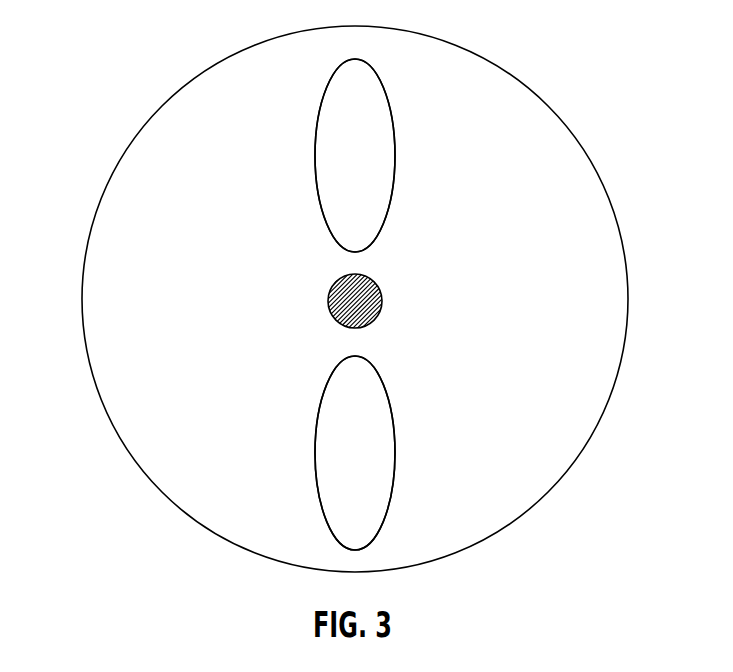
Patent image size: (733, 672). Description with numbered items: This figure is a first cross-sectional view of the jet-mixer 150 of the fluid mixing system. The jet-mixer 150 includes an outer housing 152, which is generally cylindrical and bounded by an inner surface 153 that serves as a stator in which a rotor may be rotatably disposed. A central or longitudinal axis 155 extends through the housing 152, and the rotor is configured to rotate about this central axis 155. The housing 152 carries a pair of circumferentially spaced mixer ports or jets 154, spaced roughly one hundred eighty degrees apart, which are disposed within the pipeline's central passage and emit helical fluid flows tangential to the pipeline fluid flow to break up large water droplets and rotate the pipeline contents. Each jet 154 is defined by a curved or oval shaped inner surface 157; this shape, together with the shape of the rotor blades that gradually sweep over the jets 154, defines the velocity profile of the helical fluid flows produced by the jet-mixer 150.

The jet-mixer 150 is at (114, 46).
The outer housing 152 is at (594, 166).
The inner surface 153 is at (604, 411).
The mixer ports or jets 154 is at (316, 156).
The central or longitudinal axis 155 is at (381, 307).
The inner surface of jet 157 is at (355, 304).